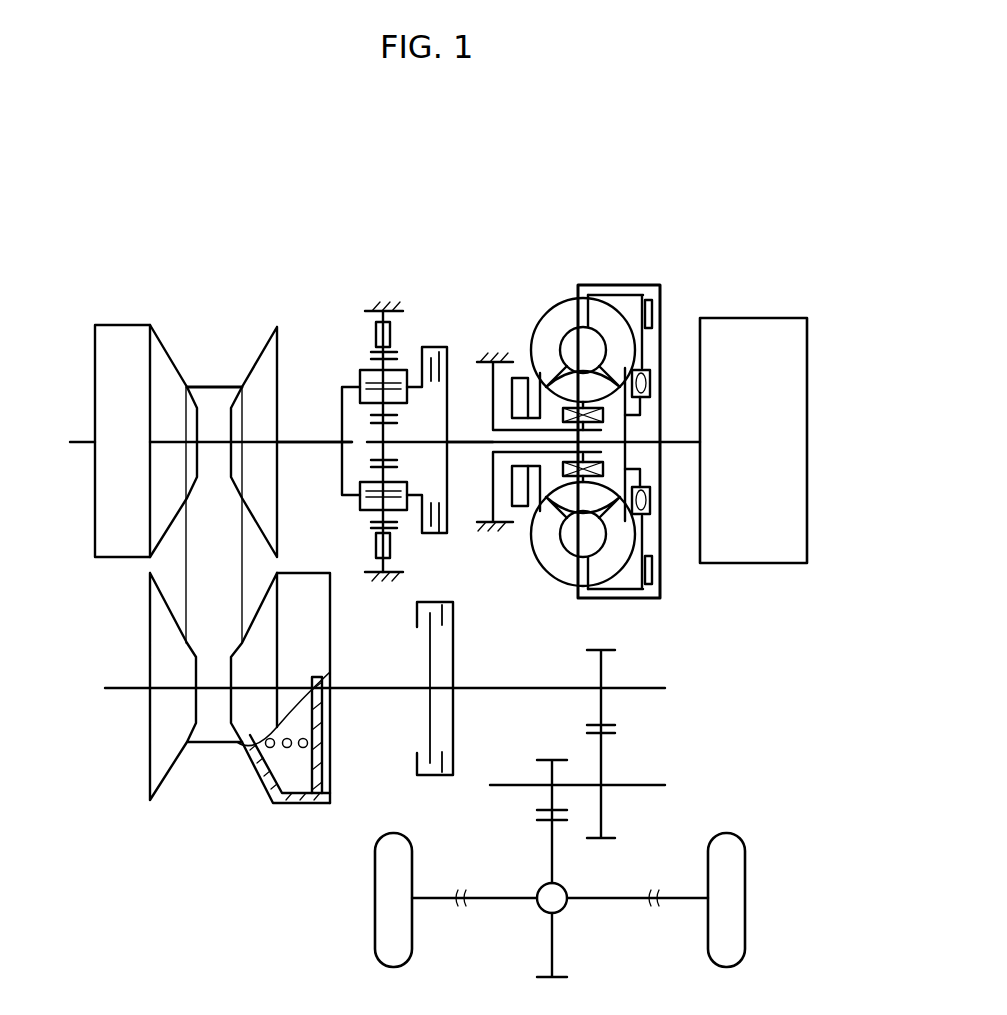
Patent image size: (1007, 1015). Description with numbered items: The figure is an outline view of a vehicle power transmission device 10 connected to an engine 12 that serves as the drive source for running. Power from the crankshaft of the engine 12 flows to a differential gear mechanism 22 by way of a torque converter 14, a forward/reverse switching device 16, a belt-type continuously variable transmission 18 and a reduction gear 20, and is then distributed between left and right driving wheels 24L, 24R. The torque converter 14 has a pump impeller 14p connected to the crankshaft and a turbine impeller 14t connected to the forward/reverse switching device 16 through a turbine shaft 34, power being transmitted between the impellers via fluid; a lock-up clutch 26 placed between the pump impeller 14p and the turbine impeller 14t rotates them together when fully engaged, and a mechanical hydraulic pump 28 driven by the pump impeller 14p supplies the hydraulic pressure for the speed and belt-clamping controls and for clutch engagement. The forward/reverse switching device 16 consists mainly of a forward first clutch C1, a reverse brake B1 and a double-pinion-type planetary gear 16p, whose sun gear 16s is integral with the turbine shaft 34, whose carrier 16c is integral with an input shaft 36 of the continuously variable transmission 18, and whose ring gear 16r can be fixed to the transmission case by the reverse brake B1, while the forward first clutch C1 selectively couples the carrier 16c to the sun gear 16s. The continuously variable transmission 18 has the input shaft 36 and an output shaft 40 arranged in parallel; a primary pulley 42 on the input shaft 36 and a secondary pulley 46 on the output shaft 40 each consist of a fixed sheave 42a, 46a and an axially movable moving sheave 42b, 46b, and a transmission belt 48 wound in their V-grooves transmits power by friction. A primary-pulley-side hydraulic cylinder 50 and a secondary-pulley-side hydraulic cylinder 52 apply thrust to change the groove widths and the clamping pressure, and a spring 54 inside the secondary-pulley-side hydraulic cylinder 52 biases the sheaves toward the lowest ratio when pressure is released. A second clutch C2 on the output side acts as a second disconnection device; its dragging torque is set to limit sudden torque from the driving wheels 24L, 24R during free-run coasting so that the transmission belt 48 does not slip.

The vehicle power transmission device 10 is at (597, 190).
The engine 12 is at (808, 390).
The torque converter 14 is at (605, 429).
The pump impeller 14p is at (550, 562).
The turbine impeller 14t is at (600, 568).
The forward/reverse switching device 16 is at (385, 367).
The double-pinion-type planetary gear 16p is at (389, 283).
The sun gear 16s is at (378, 455).
The carrier 16c is at (360, 378).
The ring gear 16r is at (380, 528).
The belt-type continuously variable transmission 18 is at (354, 603).
The reduction gear 20 is at (683, 742).
The differential gear mechanism 22 is at (545, 905).
The left driving wheel 24L is at (383, 926).
The right driving wheel 24R is at (735, 915).
The lock-up clutch 26 is at (653, 308).
The mechanical hydraulic pump 28 is at (523, 378).
The turbine shaft 34 is at (463, 447).
The input shaft 36 is at (310, 440).
The output shaft 40 is at (363, 690).
The primary pulley 42 is at (160, 453).
The fixed sheave 42a is at (260, 358).
The moving sheave 42b is at (160, 358).
The secondary pulley 46 is at (212, 713).
The fixed sheave 46a is at (160, 755).
The moving sheave 46b is at (252, 725).
The transmission belt 48 is at (215, 383).
The primary-pulley-side hydraulic cylinder 50 is at (107, 348).
The secondary-pulley-side hydraulic cylinder 52 is at (340, 657).
The spring 54 is at (273, 745).
The reverse brake B1 is at (372, 441).
The forward first clutch C1 is at (447, 347).
The second clutch C2 is at (439, 718).